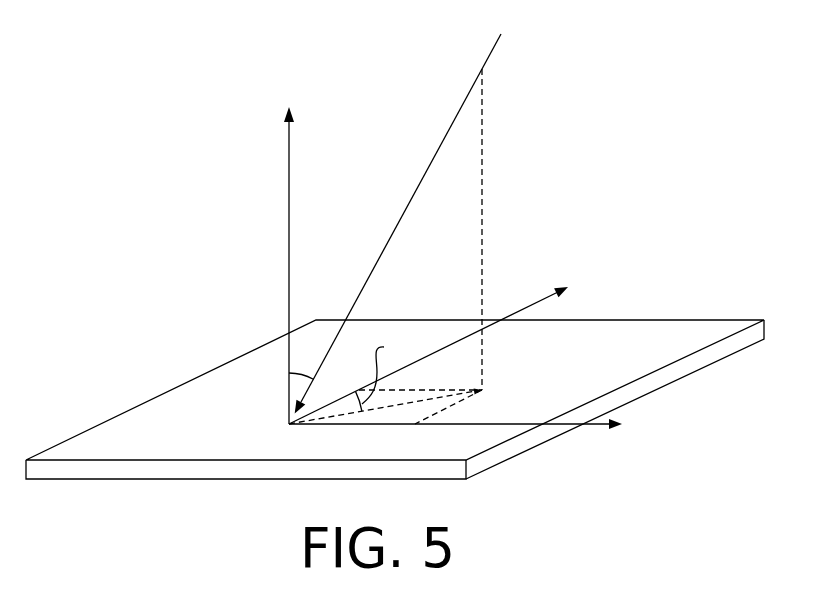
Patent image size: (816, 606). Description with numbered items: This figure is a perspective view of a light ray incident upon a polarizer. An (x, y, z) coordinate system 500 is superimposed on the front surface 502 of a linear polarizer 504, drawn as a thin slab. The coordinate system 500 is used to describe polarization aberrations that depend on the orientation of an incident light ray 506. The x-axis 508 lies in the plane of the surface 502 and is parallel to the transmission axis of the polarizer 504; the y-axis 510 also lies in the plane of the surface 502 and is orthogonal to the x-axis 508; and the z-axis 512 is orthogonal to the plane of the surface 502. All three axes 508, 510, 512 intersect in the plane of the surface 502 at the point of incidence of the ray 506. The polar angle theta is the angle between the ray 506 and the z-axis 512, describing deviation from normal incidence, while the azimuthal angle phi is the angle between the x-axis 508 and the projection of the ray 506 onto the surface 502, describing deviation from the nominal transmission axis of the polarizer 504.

The coordinate system 500 is at (612, 110).
The front surface 502 is at (215, 447).
The linear polarizer 504 is at (696, 358).
The incident light ray 506 is at (455, 118).
The x-axis 508 is at (548, 290).
The y-axis 510 is at (601, 427).
The z-axis 512 is at (289, 195).